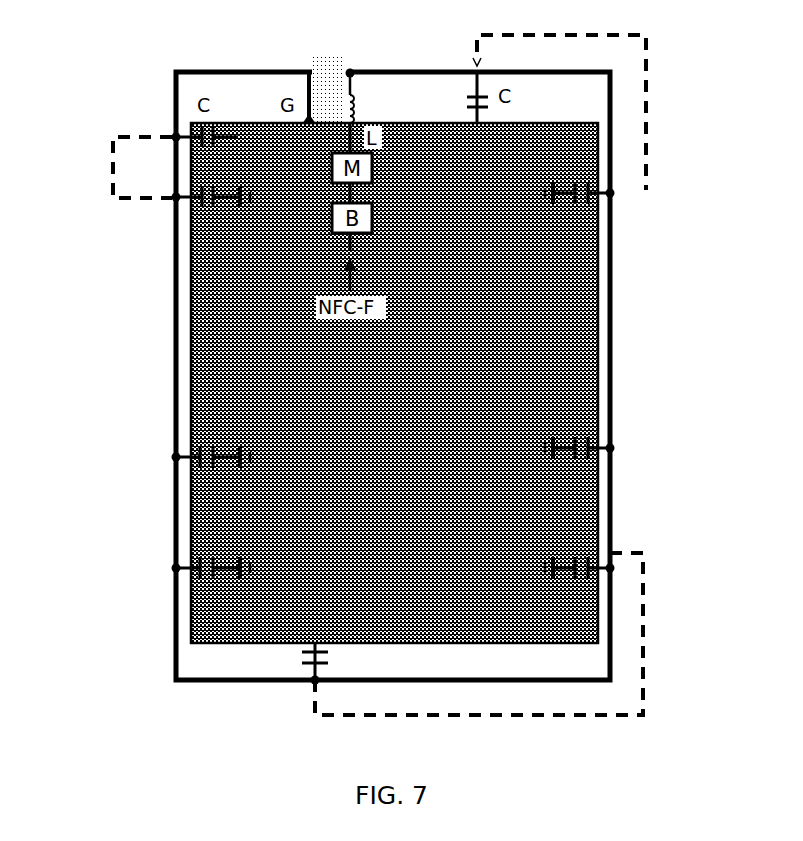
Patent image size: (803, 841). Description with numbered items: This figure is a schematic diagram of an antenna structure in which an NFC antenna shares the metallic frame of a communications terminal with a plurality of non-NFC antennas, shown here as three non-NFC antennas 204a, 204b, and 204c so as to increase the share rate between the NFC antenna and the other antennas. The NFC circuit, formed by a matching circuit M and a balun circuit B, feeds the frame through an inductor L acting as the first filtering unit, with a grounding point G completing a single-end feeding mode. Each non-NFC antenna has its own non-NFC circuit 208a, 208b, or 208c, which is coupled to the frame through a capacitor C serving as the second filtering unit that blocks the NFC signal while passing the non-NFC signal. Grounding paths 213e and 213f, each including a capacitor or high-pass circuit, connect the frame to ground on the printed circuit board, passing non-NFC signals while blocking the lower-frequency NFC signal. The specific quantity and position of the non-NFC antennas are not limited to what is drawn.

The non-NFC antenna 204a is at (506, 634).
The non-NFC antenna 204b is at (110, 167).
The non-NFC antenna 204c is at (570, 96).
The non-NFC circuit 208a is at (315, 616).
The non-NFC circuit 208b is at (273, 137).
The non-NFC circuit 208c is at (477, 142).
The grounding path 213e is at (212, 211).
The grounding path 213f is at (567, 212).